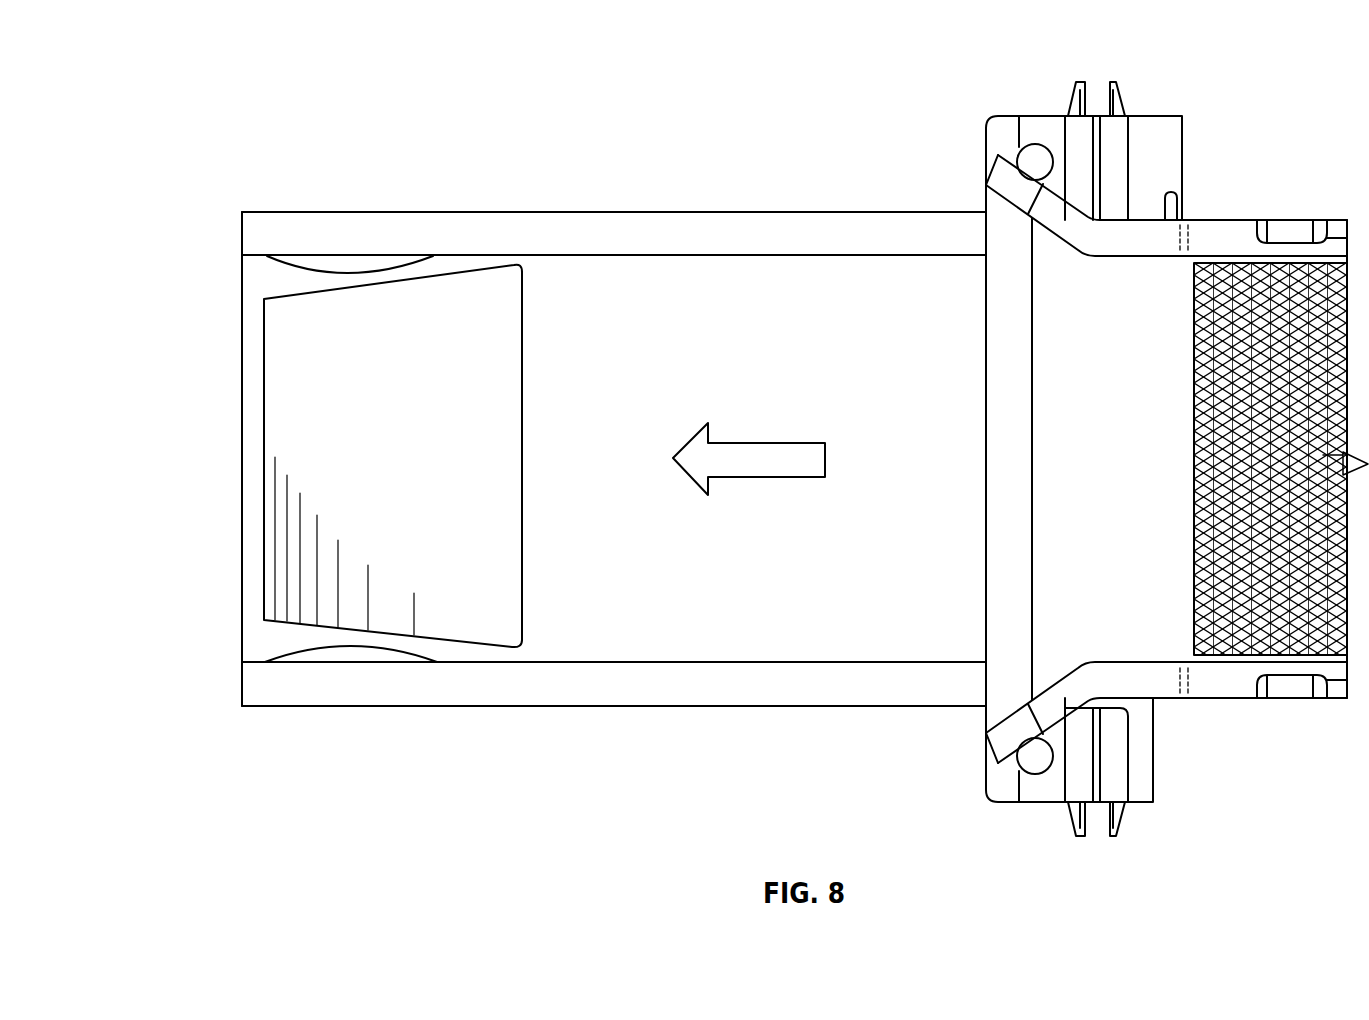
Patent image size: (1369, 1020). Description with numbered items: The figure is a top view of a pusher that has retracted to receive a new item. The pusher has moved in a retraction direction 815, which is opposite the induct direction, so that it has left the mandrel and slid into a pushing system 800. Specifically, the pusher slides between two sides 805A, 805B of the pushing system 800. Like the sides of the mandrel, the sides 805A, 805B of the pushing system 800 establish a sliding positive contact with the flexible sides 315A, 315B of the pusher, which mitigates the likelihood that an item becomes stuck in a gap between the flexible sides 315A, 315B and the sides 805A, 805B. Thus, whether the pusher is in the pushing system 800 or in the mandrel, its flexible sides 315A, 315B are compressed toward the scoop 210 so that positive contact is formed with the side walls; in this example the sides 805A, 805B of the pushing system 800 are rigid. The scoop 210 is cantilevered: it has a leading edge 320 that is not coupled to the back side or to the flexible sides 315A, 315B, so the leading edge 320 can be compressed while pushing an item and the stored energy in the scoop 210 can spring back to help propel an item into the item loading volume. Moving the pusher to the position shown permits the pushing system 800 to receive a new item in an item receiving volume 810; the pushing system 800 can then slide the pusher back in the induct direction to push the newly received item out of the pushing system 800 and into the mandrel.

The pushing system 800 is at (246, 102).
The side 805A is at (649, 212).
The side 805B is at (413, 706).
The item receiving volume 810 is at (726, 571).
The retraction direction 815 is at (745, 441).
The scoop 210 is at (333, 437).
The leading edge 320 is at (522, 613).
The flexible side 315A is at (368, 648).
The flexible side 315B is at (311, 268).